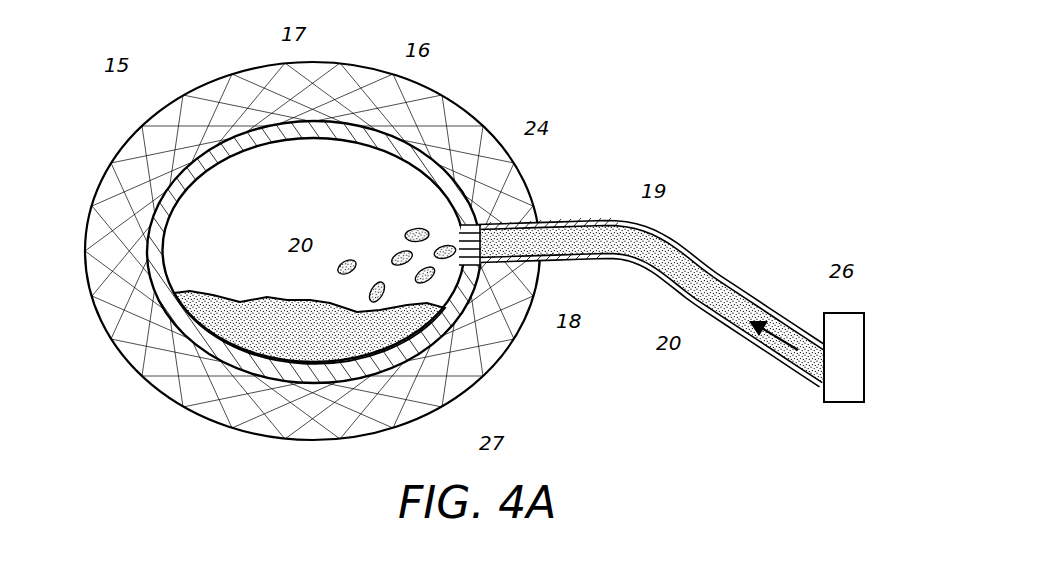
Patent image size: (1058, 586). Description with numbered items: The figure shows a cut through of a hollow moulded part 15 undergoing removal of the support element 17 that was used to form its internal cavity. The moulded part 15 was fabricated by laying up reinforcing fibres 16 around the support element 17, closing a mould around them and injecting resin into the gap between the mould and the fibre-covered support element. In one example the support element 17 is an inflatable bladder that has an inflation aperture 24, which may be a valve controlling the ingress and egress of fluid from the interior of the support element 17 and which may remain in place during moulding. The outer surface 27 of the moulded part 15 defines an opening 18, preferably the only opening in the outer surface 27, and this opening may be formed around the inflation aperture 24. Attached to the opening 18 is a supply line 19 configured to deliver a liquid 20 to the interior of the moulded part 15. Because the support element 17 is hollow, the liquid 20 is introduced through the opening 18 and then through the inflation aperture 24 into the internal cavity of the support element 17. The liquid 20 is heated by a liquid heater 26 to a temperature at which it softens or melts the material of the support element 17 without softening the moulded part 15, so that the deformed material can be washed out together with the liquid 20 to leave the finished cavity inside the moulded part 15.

The moulded part 15 is at (117, 76).
The reinforcing fibres 16 is at (399, 99).
The support element 17 is at (305, 133).
The opening 18 is at (513, 247).
The supply line 19 is at (638, 228).
The liquid 20 is at (695, 287).
The inflation aperture 24 is at (466, 268).
The liquid heater 26 is at (842, 313).
The outer surface 27 is at (467, 392).